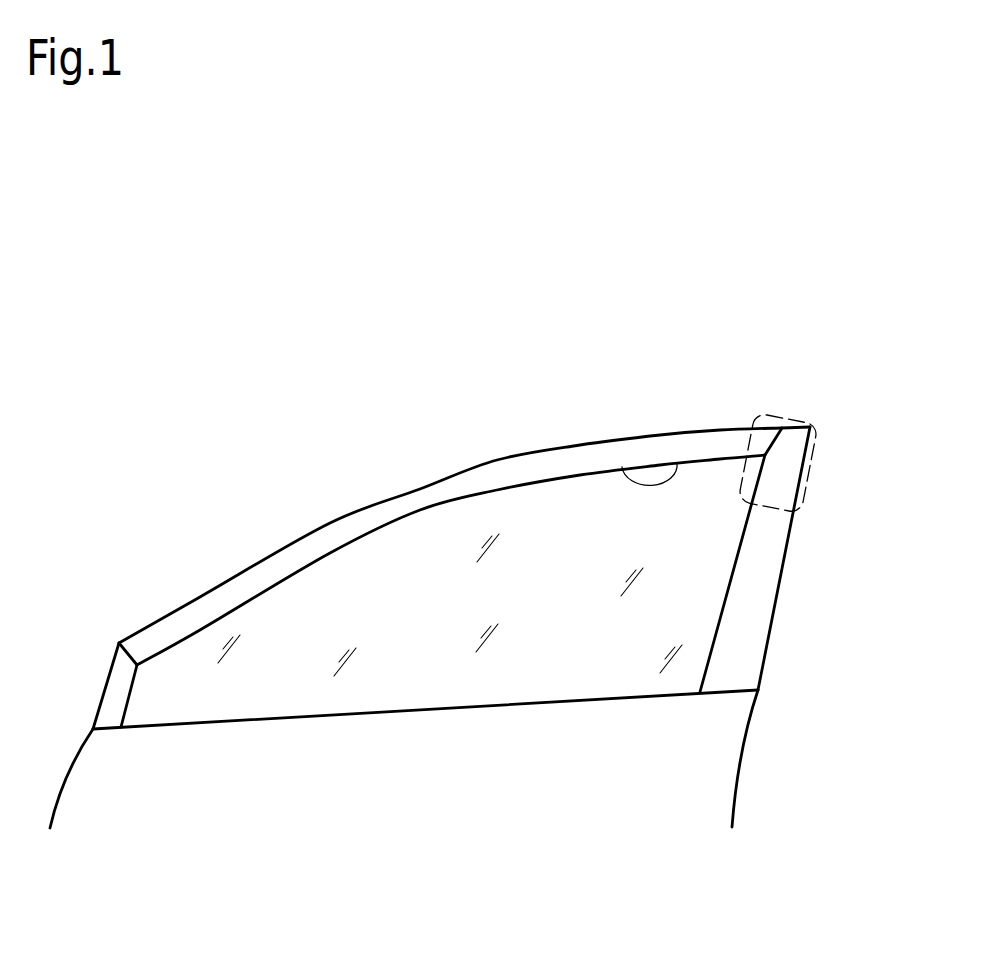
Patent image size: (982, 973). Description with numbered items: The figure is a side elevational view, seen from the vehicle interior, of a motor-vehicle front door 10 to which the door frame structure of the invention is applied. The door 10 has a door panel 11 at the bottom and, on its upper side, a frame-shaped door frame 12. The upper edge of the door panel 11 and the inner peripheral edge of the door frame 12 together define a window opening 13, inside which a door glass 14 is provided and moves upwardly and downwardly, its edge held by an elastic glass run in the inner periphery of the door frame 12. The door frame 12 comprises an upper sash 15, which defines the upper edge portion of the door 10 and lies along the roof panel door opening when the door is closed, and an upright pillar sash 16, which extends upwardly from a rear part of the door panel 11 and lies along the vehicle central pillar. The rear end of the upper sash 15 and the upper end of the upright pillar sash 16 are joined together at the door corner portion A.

The front door 10 is at (205, 427).
The door panel 11 is at (715, 775).
The door frame 12 is at (575, 443).
The window opening 13 is at (677, 463).
The door glass 14 is at (407, 567).
The upper sash 15 is at (477, 482).
The upright pillar sash 16 is at (750, 595).
The door corner portion A is at (792, 408).